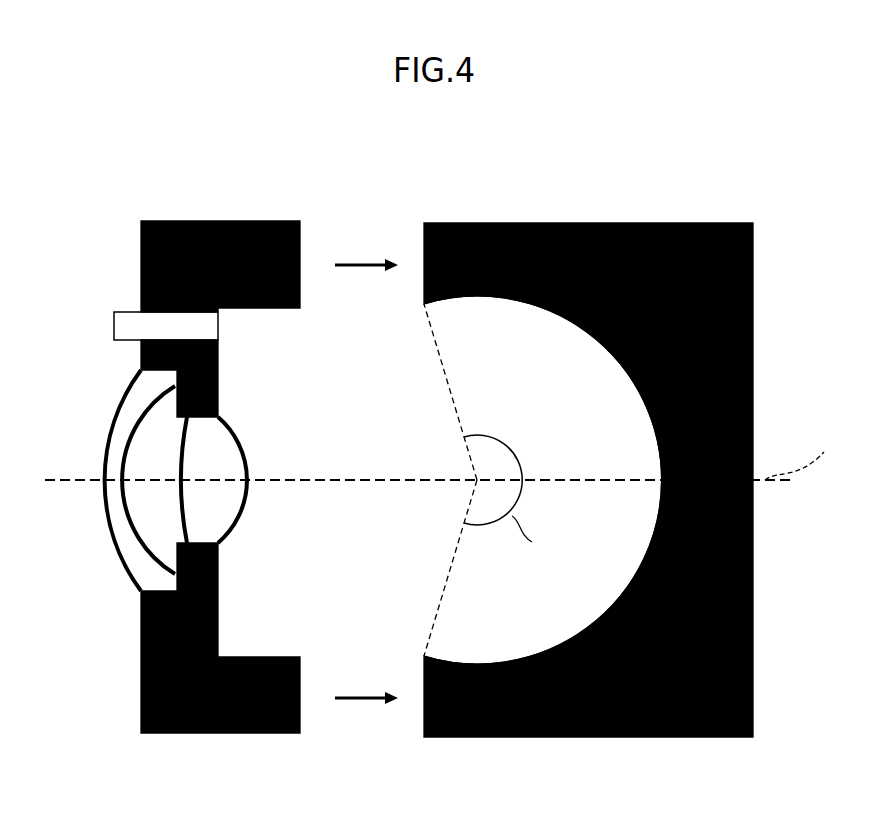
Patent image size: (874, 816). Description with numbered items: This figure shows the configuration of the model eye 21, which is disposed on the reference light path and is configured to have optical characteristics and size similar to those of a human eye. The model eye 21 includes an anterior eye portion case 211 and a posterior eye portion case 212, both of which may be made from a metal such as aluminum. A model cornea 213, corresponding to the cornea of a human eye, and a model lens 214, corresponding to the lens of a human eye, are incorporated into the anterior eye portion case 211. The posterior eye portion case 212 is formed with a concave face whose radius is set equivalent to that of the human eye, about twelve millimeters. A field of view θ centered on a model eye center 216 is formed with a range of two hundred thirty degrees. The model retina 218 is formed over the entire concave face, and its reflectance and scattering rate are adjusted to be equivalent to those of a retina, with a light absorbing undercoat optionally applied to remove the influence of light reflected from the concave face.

The model eye 21 is at (638, 156).
The anterior eye portion case 211 is at (207, 221).
The posterior eye portion case 212 is at (530, 223).
The model cornea 213 is at (113, 548).
The model lens 214 is at (237, 523).
The model eye center 216 is at (473, 480).
The model retina 218 is at (478, 302).